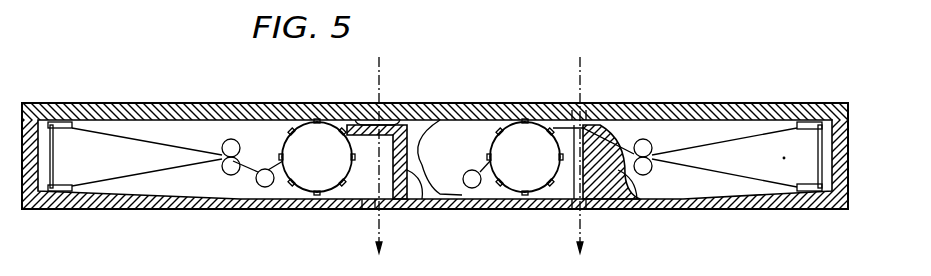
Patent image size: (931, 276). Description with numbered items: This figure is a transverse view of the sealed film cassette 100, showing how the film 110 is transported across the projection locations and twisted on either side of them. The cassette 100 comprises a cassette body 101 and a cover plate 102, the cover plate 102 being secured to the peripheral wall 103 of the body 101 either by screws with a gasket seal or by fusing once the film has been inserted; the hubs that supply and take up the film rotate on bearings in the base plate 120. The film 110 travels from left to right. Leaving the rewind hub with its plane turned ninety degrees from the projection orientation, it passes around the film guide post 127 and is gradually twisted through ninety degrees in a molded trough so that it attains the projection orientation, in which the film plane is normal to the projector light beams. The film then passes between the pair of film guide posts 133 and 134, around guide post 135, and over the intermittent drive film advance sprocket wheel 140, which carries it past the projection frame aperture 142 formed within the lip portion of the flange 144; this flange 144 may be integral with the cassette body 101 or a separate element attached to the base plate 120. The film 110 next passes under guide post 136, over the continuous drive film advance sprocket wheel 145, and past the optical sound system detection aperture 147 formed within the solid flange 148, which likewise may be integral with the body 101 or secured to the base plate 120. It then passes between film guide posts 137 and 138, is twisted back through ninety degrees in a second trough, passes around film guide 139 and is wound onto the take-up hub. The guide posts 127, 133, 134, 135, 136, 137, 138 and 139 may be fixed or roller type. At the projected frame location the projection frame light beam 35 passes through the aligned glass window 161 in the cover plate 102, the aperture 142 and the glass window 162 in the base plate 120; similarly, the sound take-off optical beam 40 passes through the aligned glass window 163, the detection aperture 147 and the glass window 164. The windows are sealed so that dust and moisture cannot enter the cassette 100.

The projection frame light beam 35 is at (381, 60).
The sound take-off optical beam 40 is at (582, 70).
The sealed film cassette 100 is at (506, 60).
The cassette body 101 is at (848, 211).
The cover plate 102 is at (812, 103).
The peripheral wall 103 is at (849, 160).
The film 110 is at (115, 152).
The base plate 120 is at (110, 210).
The film guide post 127 is at (75, 102).
The film guide post 133 is at (237, 146).
The film guide post 134 is at (228, 172).
The film guide post 135 is at (263, 183).
The film guide post 136 is at (474, 185).
The film guide post 137 is at (652, 143).
The film guide post 138 is at (652, 170).
The film guide post 139 is at (798, 103).
The intermittent drive film advance sprocket wheel 140 is at (337, 166).
The projection frame aperture 142 is at (388, 124).
The flange 144 is at (411, 180).
The continuous drive film advance sprocket wheel 145 is at (545, 166).
The optical sound system detection aperture 147 is at (602, 122).
The solid flange 148 is at (626, 180).
The glass window 161 is at (371, 112).
The glass window 162 is at (373, 203).
The glass window 163 is at (577, 115).
The glass window 164 is at (577, 205).